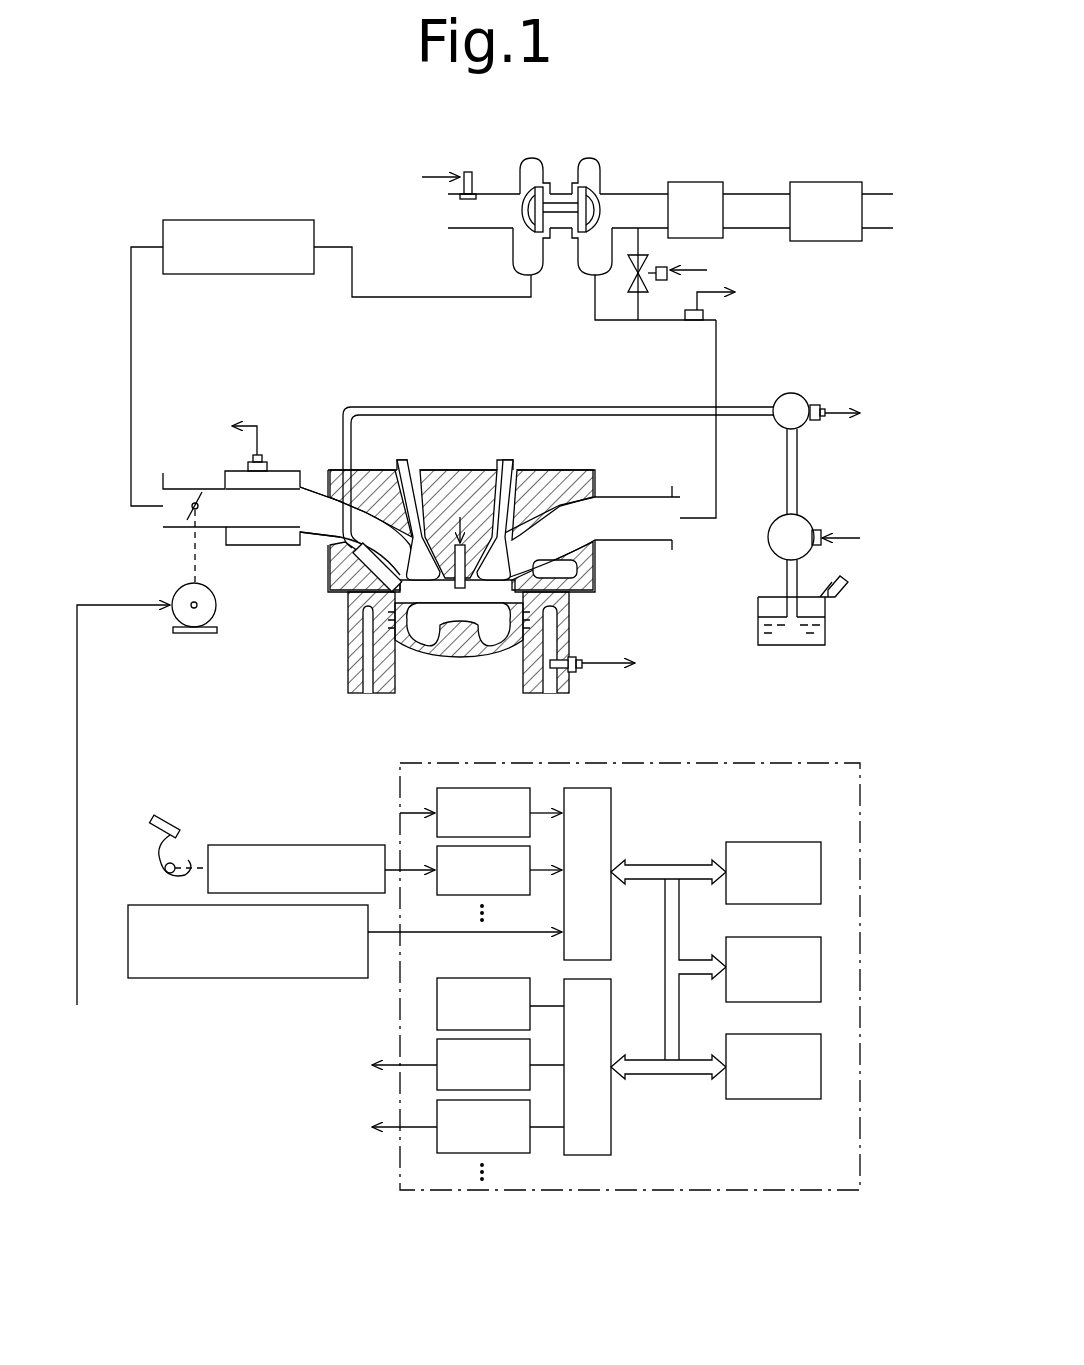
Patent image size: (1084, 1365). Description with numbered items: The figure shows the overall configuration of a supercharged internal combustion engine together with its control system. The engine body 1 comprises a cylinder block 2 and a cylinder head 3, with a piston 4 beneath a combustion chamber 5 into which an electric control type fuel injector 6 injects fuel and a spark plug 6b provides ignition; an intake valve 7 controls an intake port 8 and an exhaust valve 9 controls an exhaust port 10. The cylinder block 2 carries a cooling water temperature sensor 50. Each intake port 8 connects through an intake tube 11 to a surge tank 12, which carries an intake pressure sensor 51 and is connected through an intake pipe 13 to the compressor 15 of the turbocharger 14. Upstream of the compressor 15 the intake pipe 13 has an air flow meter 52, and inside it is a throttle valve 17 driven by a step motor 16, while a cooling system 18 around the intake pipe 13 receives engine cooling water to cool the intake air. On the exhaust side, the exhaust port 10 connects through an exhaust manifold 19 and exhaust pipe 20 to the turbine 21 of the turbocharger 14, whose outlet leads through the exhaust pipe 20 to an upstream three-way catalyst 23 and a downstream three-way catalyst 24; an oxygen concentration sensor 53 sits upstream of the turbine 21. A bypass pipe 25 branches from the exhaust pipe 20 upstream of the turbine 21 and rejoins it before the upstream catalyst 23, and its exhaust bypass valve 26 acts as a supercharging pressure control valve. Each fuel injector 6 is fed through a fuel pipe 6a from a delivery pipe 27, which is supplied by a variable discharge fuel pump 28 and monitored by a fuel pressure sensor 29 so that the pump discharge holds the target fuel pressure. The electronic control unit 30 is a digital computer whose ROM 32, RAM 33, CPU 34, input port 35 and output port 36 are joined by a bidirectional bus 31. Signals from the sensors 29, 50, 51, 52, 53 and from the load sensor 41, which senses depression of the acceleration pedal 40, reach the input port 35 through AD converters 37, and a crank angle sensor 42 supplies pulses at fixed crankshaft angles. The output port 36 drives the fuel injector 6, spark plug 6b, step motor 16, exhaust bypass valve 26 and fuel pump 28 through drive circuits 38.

The engine body 1 is at (496, 663).
The cylinder block 2 is at (565, 632).
The cylinder head 3 is at (364, 490).
The piston 4 is at (459, 668).
The combustion chamber 5 is at (425, 648).
The electric control type fuel injector 6 is at (360, 585).
The fuel pipe 6a is at (686, 405).
The spark plug 6b is at (458, 590).
The intake valve 7 is at (410, 470).
The intake port 8 is at (345, 548).
The exhaust valve 9 is at (520, 470).
The exhaust port 10 is at (585, 528).
The intake tube 11 is at (318, 485).
The surge tank 12 is at (255, 545).
The intake pipe 13 is at (178, 432).
The turbocharger 14 is at (515, 223).
The compressor 15 is at (520, 268).
The step motor 16 is at (175, 622).
The throttle valve 17 is at (185, 515).
The cooling system 18 is at (255, 235).
The exhaust manifold 19 is at (660, 513).
The exhaust pipe 20 is at (718, 352).
The turbine 21 is at (585, 278).
The upstream three-way catalyst 23 is at (710, 188).
The downstream three-way catalyst 24 is at (838, 190).
The bypass pipe 25 is at (642, 245).
The exhaust bypass valve 26 is at (668, 278).
The delivery pipe 27 is at (816, 417).
The variable discharge fuel pump 28 is at (772, 525).
The fuel pressure sensor 29 is at (818, 422).
The electronic control unit 30 is at (590, 942).
The bidirectional bus 31 is at (672, 870).
The read only memory (ROM) 32 is at (790, 842).
The random access memory (RAM) 33 is at (800, 937).
The microprocessor (CPU) 34 is at (800, 1034).
The input port 35 is at (612, 812).
The output port 36 is at (612, 1125).
The AD converters 37 is at (437, 853).
The drive circuits 38 is at (437, 1018).
The acceleration pedal 40 is at (150, 855).
The load sensor 41 is at (262, 845).
The crank angle sensor 42 is at (140, 905).
The cooling water temperature sensor 50 is at (585, 672).
The intake pressure sensor 51 is at (262, 456).
The air flow meter 52 is at (472, 172).
The oxygen concentration sensor 53 is at (705, 312).